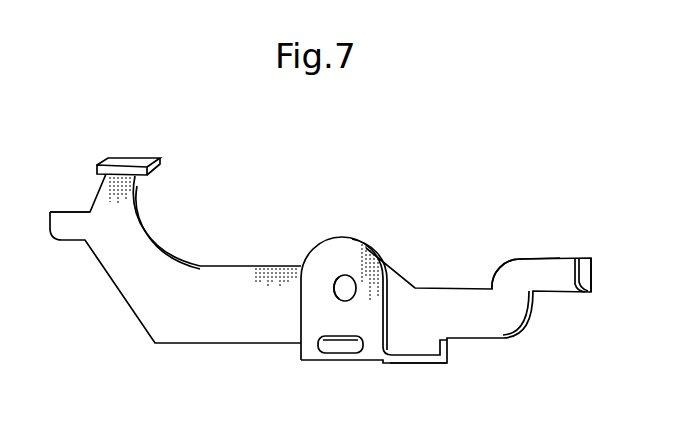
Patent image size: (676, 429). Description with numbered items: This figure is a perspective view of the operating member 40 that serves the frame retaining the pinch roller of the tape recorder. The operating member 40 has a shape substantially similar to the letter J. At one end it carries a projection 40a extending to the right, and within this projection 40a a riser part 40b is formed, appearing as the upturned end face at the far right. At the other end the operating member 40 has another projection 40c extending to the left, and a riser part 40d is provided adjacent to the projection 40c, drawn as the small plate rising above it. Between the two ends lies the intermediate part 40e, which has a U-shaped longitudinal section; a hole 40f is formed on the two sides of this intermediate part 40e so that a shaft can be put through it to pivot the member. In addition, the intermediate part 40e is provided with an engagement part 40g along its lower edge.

The operating member 40 is at (252, 250).
The projection 40a is at (527, 259).
The riser part 40b is at (610, 245).
The projection 40c is at (63, 211).
The riser part 40d is at (135, 162).
The intermediate part 40e is at (385, 366).
The hole 40f is at (341, 278).
The engagement part 40g is at (423, 366).